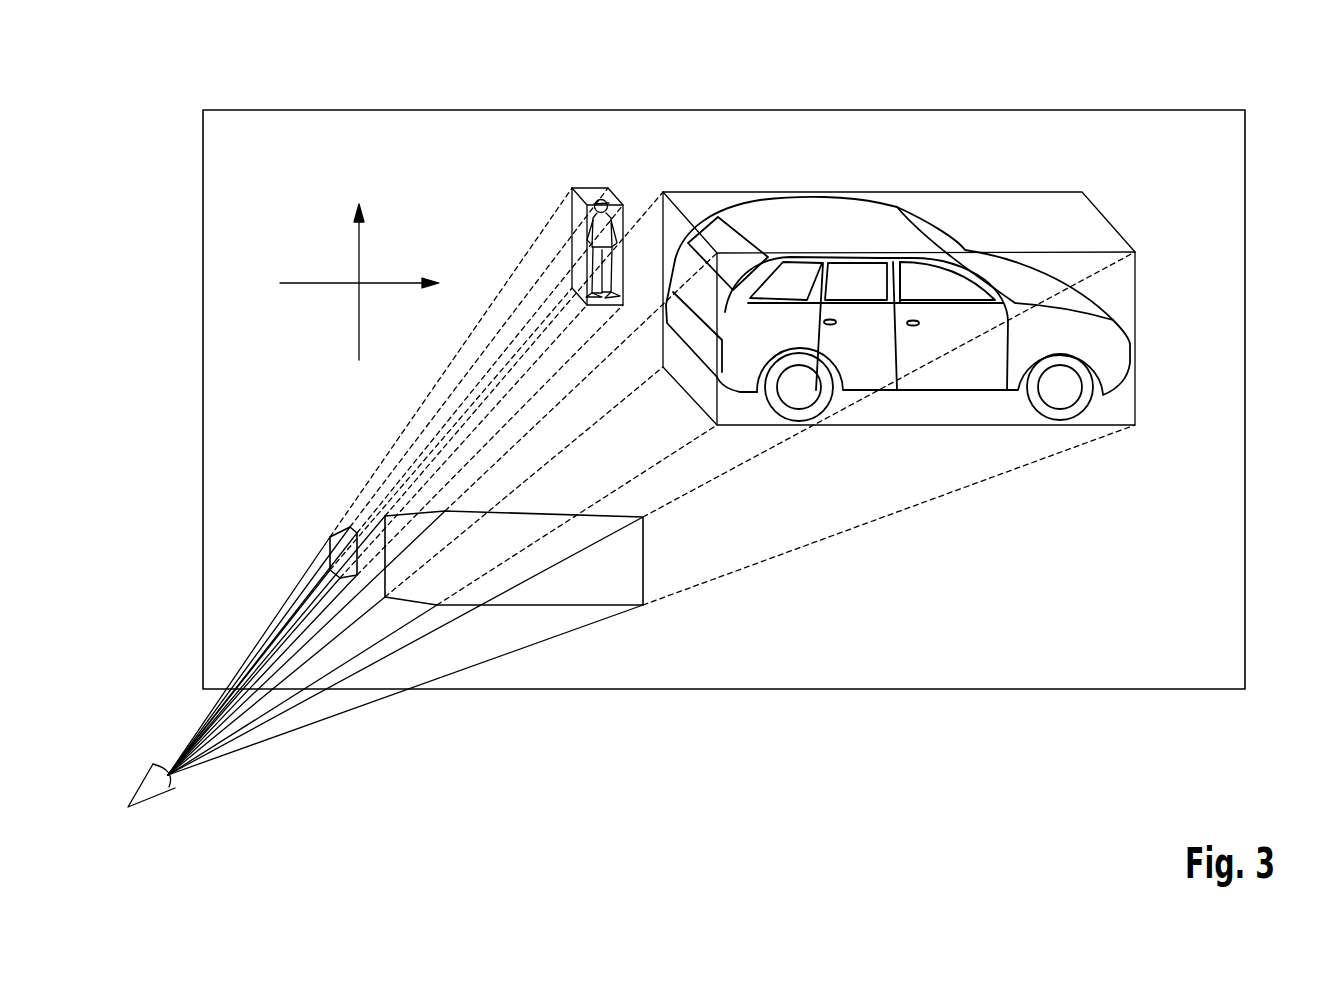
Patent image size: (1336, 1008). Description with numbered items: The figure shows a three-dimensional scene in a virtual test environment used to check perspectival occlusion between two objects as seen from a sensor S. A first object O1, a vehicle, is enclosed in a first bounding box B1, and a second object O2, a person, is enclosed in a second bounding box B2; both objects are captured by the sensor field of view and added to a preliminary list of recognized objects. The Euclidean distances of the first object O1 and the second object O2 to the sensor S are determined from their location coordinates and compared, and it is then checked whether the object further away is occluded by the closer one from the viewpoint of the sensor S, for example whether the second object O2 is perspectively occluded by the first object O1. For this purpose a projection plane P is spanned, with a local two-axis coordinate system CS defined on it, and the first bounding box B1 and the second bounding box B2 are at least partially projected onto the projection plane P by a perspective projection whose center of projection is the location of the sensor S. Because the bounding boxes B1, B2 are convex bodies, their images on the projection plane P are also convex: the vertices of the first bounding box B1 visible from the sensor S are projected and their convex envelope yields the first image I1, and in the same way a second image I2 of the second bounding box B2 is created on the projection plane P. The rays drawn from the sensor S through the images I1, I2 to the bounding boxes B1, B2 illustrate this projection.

The projection plane P is at (457, 110).
The local two-axis coordinate system CS is at (317, 236).
The sensor S is at (151, 800).
The first object O1 is at (828, 215).
The second object O2 is at (600, 197).
The first bounding box B1 is at (993, 192).
The second bounding box B2 is at (612, 190).
The first image I1 is at (643, 580).
The second image I2 is at (327, 548).